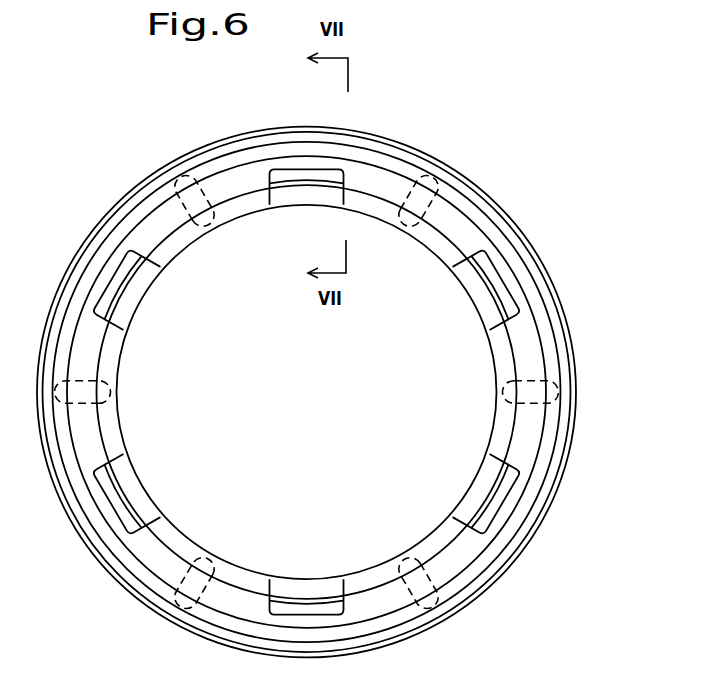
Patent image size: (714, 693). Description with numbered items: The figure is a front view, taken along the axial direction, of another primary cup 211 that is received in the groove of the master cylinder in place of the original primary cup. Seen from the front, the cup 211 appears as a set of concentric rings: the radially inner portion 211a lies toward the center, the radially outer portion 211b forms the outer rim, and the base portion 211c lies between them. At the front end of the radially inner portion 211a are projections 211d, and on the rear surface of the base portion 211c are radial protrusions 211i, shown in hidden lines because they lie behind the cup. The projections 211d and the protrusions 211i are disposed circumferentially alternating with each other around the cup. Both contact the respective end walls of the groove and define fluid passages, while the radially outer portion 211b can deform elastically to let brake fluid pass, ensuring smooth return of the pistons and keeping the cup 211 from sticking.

The primary cup 211 is at (413, 145).
The radially inner portion 211a is at (440, 248).
The radially outer portion 211b is at (467, 196).
The base portion 211c is at (455, 567).
The projections 211d is at (497, 285).
The radial protrusions 211i is at (560, 393).